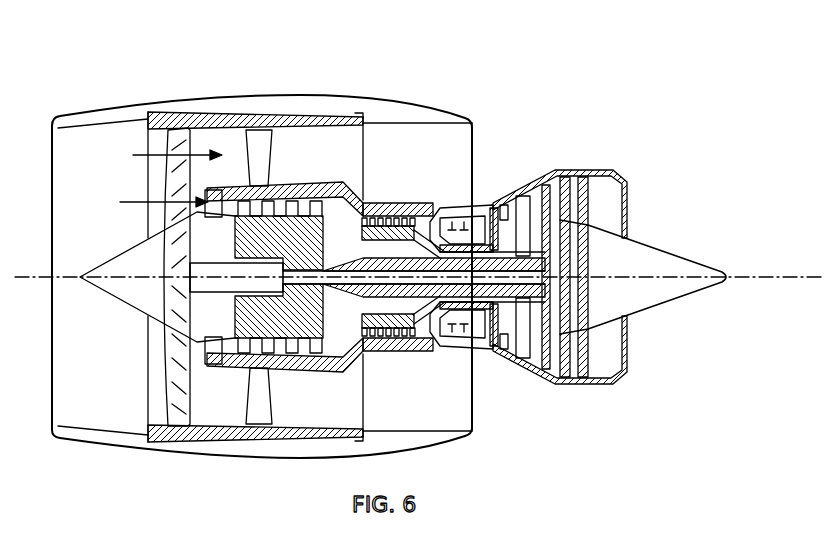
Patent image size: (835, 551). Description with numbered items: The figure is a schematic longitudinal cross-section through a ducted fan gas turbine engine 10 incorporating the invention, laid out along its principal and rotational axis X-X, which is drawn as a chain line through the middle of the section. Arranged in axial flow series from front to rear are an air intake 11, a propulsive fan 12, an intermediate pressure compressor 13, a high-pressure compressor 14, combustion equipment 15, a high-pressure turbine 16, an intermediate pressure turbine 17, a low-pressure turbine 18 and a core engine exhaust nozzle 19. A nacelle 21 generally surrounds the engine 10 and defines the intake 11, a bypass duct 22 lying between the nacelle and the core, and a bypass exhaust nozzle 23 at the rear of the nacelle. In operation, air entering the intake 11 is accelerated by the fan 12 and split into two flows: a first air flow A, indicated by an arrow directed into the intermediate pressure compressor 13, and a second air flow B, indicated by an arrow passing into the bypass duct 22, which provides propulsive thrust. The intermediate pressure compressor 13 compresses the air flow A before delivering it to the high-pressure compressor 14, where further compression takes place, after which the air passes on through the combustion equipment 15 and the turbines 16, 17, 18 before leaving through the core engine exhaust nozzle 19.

The ducted fan gas turbine engine 10 is at (90, 64).
The air intake 11 is at (99, 124).
The propulsive fan 12 is at (165, 388).
The intermediate pressure compressor 13 is at (298, 357).
The high-pressure compressor 14 is at (395, 210).
The combustion equipment 15 is at (427, 353).
The high-pressure turbine 16 is at (477, 362).
The intermediate pressure turbine 17 is at (518, 187).
The low-pressure turbine 18 is at (537, 373).
The core engine exhaust nozzle 19 is at (618, 180).
The nacelle 21 is at (298, 104).
The bypass duct 22 is at (431, 157).
The bypass exhaust nozzle 23 is at (476, 118).
The first air flow A is at (155, 202).
The second air flow B is at (168, 155).
The principal and rotational axis X is at (418, 265).